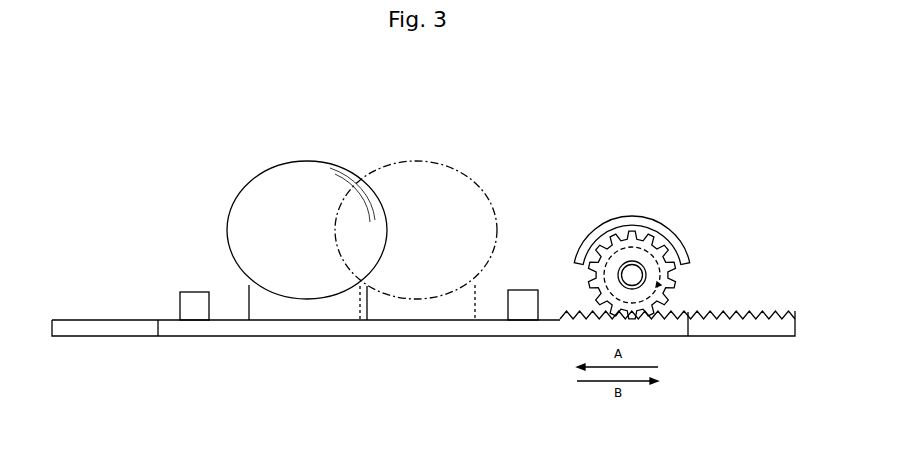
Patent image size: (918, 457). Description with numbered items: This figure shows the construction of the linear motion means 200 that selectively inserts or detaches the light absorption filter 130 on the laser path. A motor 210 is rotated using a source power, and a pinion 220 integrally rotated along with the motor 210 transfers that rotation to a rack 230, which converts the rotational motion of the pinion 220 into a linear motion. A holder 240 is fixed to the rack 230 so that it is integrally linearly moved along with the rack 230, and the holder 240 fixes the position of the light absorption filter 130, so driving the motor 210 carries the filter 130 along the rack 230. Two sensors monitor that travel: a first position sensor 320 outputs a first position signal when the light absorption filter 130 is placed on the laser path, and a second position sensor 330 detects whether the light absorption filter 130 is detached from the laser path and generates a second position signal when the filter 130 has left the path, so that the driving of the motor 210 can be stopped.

The light absorption filter 130 is at (296, 173).
The linear motion means 200 is at (573, 221).
The motor 210 is at (637, 220).
The pinion 220 is at (678, 290).
The rack 230 is at (452, 331).
The holder 240 is at (249, 302).
The first position sensor 320 is at (188, 303).
The second position sensor 330 is at (522, 289).